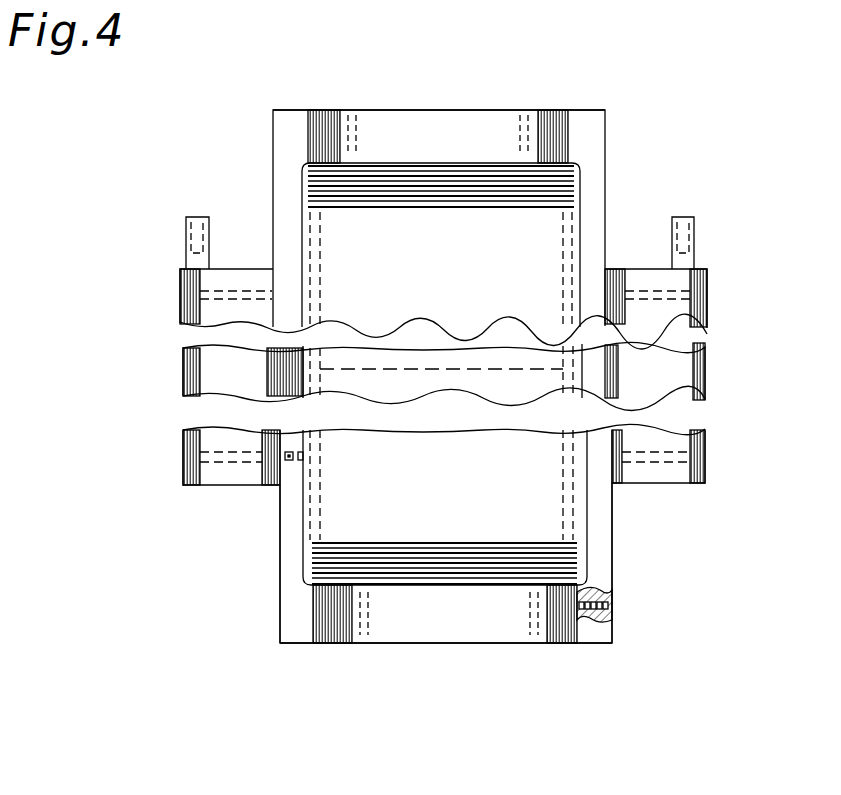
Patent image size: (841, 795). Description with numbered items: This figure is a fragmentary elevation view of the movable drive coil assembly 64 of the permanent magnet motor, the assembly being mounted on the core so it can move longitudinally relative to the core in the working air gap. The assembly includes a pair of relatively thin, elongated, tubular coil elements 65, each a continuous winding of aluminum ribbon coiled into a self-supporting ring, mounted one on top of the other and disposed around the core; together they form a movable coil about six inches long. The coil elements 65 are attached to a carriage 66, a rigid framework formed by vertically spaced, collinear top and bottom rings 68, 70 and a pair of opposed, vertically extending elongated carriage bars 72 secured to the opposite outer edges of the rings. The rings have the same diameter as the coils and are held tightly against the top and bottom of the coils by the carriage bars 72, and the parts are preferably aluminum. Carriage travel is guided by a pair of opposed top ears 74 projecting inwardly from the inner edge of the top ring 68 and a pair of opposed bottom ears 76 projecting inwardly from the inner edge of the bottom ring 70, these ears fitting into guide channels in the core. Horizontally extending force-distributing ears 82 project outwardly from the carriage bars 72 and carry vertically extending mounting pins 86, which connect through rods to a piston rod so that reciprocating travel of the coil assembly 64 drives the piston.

The movable drive coil assembly 64 is at (264, 180).
The coil elements 65 is at (448, 208).
The carriage 66 is at (600, 540).
The top ring 68 is at (425, 120).
The bottom ring 70 is at (468, 631).
The carriage bars 72 is at (287, 512).
The top ears 74 is at (340, 118).
The bottom ears 76 is at (350, 645).
The force-distributing ears 82 is at (187, 281).
The mounting pins 86 is at (186, 233).